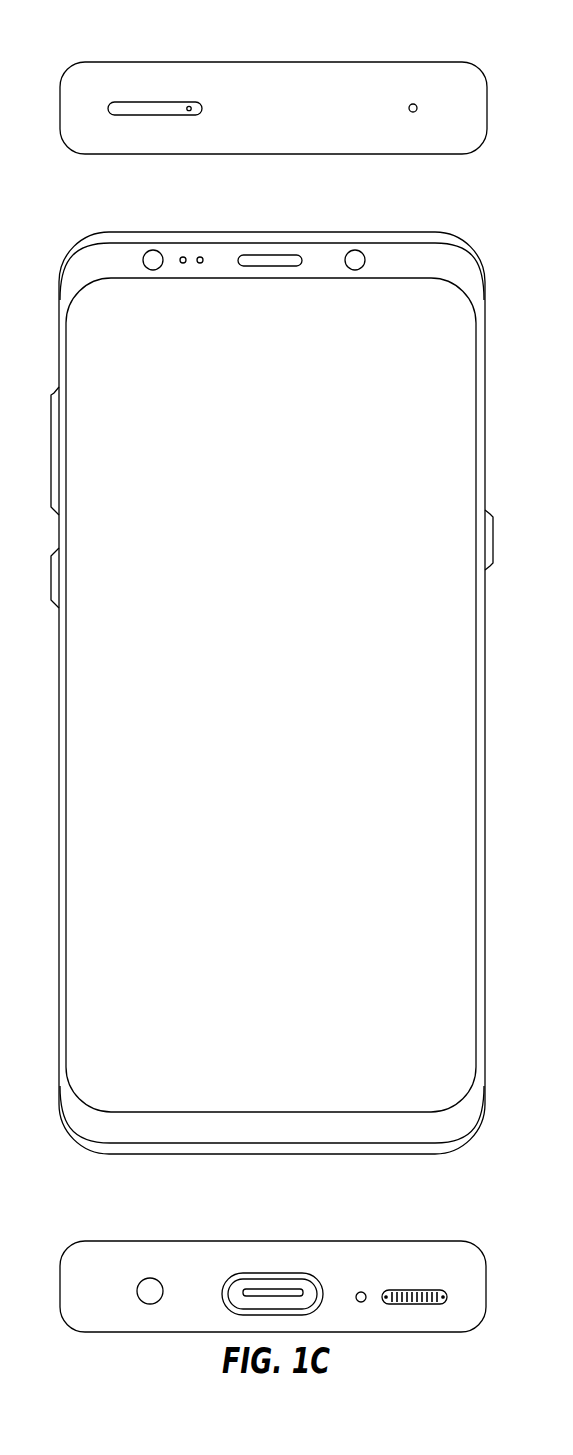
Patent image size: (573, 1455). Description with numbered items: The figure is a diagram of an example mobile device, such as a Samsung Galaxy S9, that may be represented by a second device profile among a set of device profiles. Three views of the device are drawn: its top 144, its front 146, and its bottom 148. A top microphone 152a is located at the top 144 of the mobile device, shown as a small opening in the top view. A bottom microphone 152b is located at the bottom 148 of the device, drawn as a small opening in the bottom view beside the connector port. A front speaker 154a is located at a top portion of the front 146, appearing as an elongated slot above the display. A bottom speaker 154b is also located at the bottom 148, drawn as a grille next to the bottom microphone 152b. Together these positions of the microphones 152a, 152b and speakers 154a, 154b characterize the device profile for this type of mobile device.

The top 144 is at (125, 46).
The front 146 is at (125, 216).
The bottom 148 is at (125, 1224).
The top microphone 152a is at (415, 103).
The bottom microphone 152b is at (361, 1291).
The front speaker 154a is at (297, 255).
The bottom speaker 154b is at (422, 1290).